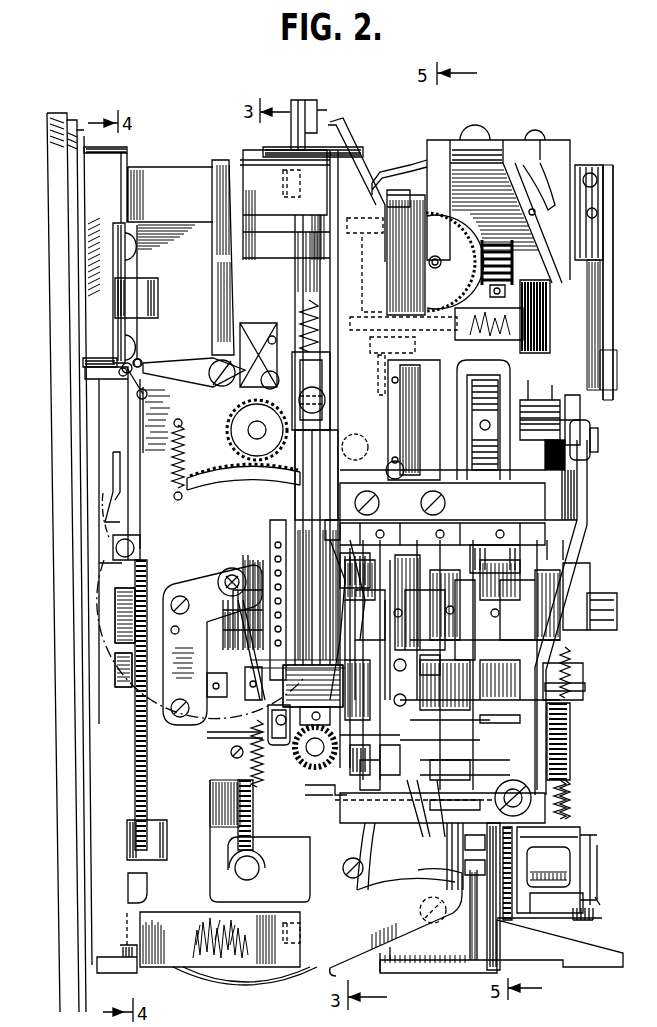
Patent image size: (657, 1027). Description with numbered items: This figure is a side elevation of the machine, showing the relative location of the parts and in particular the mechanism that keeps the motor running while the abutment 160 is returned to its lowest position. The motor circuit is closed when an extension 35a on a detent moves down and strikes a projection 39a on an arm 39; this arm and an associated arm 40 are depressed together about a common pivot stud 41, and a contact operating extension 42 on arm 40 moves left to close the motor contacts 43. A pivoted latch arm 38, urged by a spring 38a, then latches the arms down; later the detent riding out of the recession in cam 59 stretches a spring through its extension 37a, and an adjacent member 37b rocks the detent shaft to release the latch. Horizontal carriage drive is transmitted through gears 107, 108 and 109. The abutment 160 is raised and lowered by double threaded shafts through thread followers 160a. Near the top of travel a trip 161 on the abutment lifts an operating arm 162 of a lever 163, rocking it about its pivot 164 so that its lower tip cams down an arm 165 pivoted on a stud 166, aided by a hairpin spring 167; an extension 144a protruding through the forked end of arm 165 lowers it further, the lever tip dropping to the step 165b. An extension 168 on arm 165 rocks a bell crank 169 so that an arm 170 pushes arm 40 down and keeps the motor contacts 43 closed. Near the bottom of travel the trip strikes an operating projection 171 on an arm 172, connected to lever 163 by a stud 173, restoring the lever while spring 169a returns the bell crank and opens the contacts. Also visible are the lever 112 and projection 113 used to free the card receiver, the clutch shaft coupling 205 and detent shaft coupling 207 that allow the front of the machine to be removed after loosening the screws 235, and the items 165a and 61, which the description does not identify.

The lever 112 is at (292, 103).
The projection 113 is at (320, 115).
The lever 163 is at (219, 165).
The screws 235 is at (298, 180).
The operating arm 162 is at (318, 300).
The trip 161 is at (330, 360).
The thread follower 160a is at (325, 395).
The abutment 160 is at (330, 432).
The stud 173 is at (259, 355).
The pivot 164 is at (212, 376).
The hairpin spring 167 is at (128, 382).
The gear 109 is at (228, 418).
The bell crank 169 is at (162, 459).
The spring 169a is at (163, 445).
The extension 168 is at (113, 463).
The toothed sector 165a is at (243, 475).
The arm 170 is at (306, 762).
The stud 166 is at (145, 558).
The arm 165 is at (192, 565).
The step 165b is at (234, 568).
The clutch shaft coupling 205 is at (207, 641).
The gear 108 is at (140, 706).
The arm 172 is at (245, 688).
The arm 39 is at (306, 790).
The arm 40 is at (293, 815).
The motor contacts 43 is at (560, 418).
The contact operating extension 42 is at (587, 482).
The extension 144a is at (452, 528).
The operating projection 171 is at (327, 530).
The gear 107 is at (368, 553).
The cam 59 is at (495, 561).
The gear 61 is at (440, 668).
The detent shaft coupling 207 is at (366, 747).
The member 37b is at (482, 680).
The extension 37a is at (487, 722).
The extension 35a is at (450, 770).
The spring 38a is at (455, 797).
The pivot stud 41 is at (532, 803).
The latch arm 38 is at (411, 826).
The projection 39a is at (445, 840).